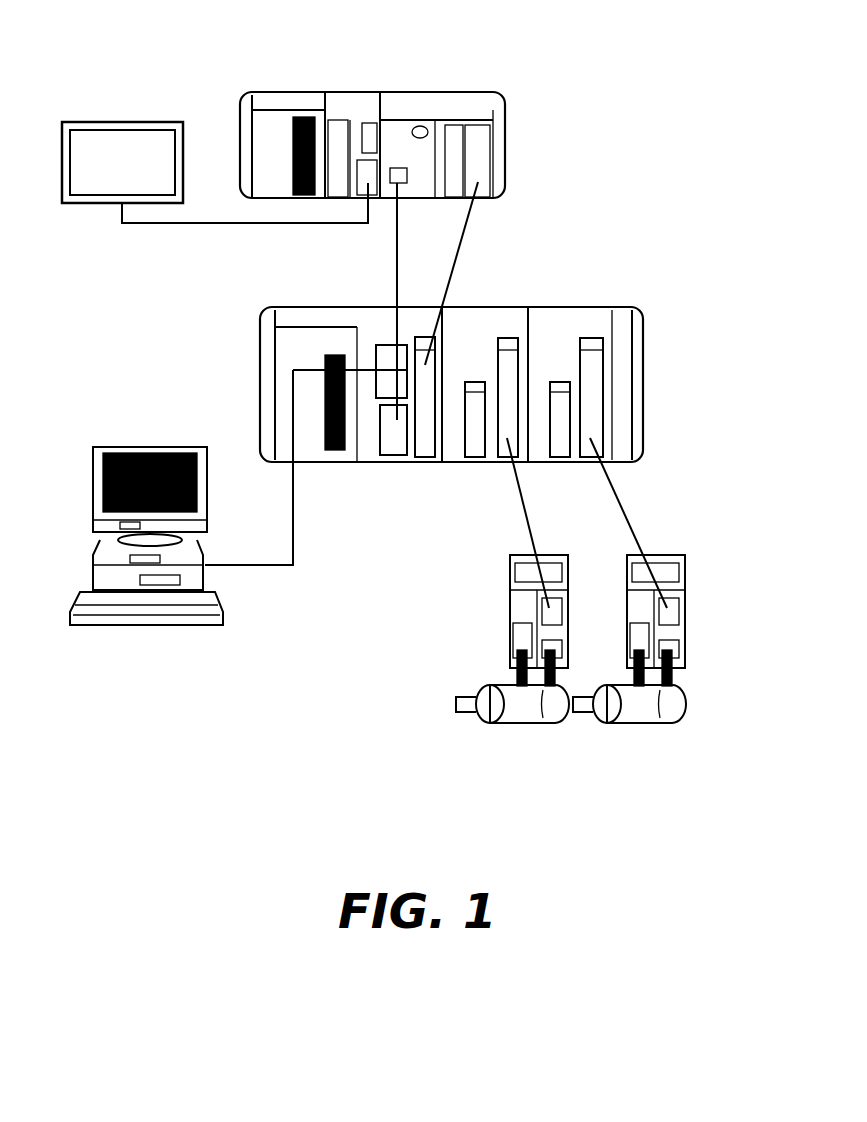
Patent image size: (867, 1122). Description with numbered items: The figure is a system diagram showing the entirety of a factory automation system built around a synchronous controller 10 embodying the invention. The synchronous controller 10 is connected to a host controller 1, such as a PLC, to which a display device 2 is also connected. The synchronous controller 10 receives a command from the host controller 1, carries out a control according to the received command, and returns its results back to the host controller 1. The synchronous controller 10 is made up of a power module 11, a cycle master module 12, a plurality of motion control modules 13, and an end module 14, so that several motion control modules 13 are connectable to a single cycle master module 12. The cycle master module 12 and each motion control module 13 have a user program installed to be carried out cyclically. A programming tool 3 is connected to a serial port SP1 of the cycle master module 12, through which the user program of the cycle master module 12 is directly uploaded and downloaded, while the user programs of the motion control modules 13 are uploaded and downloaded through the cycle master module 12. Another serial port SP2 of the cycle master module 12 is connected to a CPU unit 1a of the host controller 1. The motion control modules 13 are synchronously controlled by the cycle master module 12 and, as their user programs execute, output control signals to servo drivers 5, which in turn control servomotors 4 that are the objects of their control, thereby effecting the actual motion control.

The host controller 1 is at (523, 140).
The CPU unit 1a is at (412, 108).
The display device 2 is at (122, 120).
The programming tool 3 is at (152, 628).
The servomotors 4 is at (518, 724).
The servo drivers 5 is at (508, 612).
The synchronous controller 10 is at (645, 306).
The power module 11 is at (262, 392).
The cycle master module 12 is at (425, 460).
The motion control modules 13 is at (487, 312).
The end module 14 is at (645, 395).
The serial port SP1 is at (392, 345).
The serial port SP2 is at (395, 458).